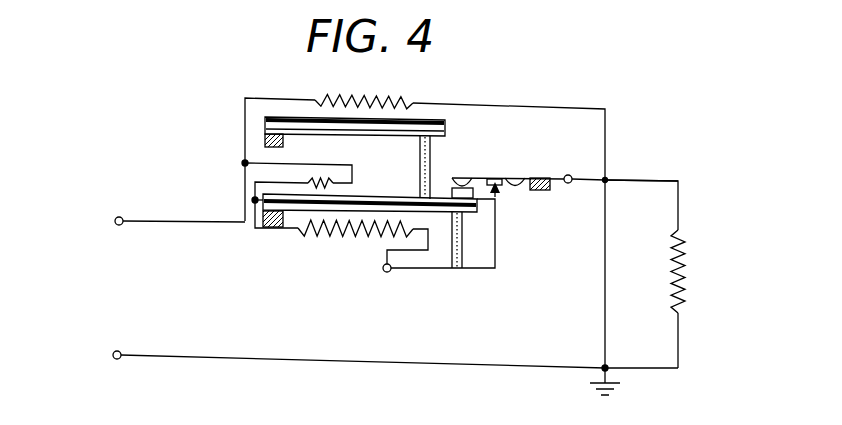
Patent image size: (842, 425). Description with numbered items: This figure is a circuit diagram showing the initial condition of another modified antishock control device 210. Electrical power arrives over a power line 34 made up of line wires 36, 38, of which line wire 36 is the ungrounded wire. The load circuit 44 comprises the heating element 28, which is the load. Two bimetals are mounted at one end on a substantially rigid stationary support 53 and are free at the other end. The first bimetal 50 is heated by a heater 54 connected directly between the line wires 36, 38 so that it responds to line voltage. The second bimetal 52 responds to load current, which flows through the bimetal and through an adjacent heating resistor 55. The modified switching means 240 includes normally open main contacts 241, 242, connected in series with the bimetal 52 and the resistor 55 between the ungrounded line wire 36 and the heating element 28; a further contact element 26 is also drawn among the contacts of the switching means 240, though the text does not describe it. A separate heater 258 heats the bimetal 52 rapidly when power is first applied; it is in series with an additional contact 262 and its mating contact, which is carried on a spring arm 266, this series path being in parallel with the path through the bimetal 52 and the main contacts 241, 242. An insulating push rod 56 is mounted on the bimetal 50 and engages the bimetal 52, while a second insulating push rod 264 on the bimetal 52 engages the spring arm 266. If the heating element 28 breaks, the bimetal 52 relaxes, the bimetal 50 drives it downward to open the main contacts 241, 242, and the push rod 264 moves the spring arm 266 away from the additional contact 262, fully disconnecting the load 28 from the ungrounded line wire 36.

The modified antishock control device 210 is at (198, 107).
The heater 54 is at (348, 92).
The first bimetal 50 is at (445, 123).
The stationary support 53 is at (265, 136).
The heating resistor 55 is at (333, 180).
The insulating push rod 56 is at (420, 146).
The second bimetal 52 is at (390, 198).
The main contact 242 is at (455, 178).
The additional contact 262 is at (527, 178).
The contact 26 is at (504, 185).
The modified switching means 240 is at (520, 214).
The main contact 241 is at (495, 197).
The insulating push rod 264 is at (462, 252).
The spring arm 266 is at (425, 272).
The separate heater 258 is at (345, 238).
The line wire 36 is at (172, 218).
The line wire 38 is at (138, 360).
The power line 34 is at (134, 277).
The load circuit 44 is at (670, 160).
The heating element 28 is at (690, 258).